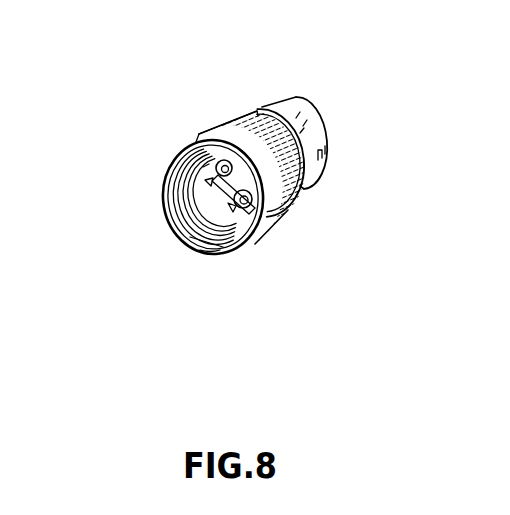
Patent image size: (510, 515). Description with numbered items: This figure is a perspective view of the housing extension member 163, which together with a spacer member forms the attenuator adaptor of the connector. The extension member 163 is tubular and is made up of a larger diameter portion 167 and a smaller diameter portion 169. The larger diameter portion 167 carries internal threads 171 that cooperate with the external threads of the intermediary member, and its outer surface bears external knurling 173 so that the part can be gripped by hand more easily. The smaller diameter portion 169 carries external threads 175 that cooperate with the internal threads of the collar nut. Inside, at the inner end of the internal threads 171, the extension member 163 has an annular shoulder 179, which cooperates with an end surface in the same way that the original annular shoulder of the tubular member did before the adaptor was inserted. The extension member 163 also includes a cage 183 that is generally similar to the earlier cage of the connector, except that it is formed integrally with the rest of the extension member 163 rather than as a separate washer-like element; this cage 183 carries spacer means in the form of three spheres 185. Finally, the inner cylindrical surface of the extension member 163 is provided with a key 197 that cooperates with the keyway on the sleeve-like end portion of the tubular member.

The housing extension member 163 is at (181, 72).
The larger diameter portion 167 is at (210, 128).
The smaller diameter portion 169 is at (289, 99).
The internal threads 171 is at (204, 252).
The external knurling 173 is at (273, 225).
The external threads 175 is at (325, 162).
The annular shoulder 179 is at (188, 238).
The cage 183 is at (203, 167).
The spheres 185 is at (209, 127).
The key 197 is at (205, 217).